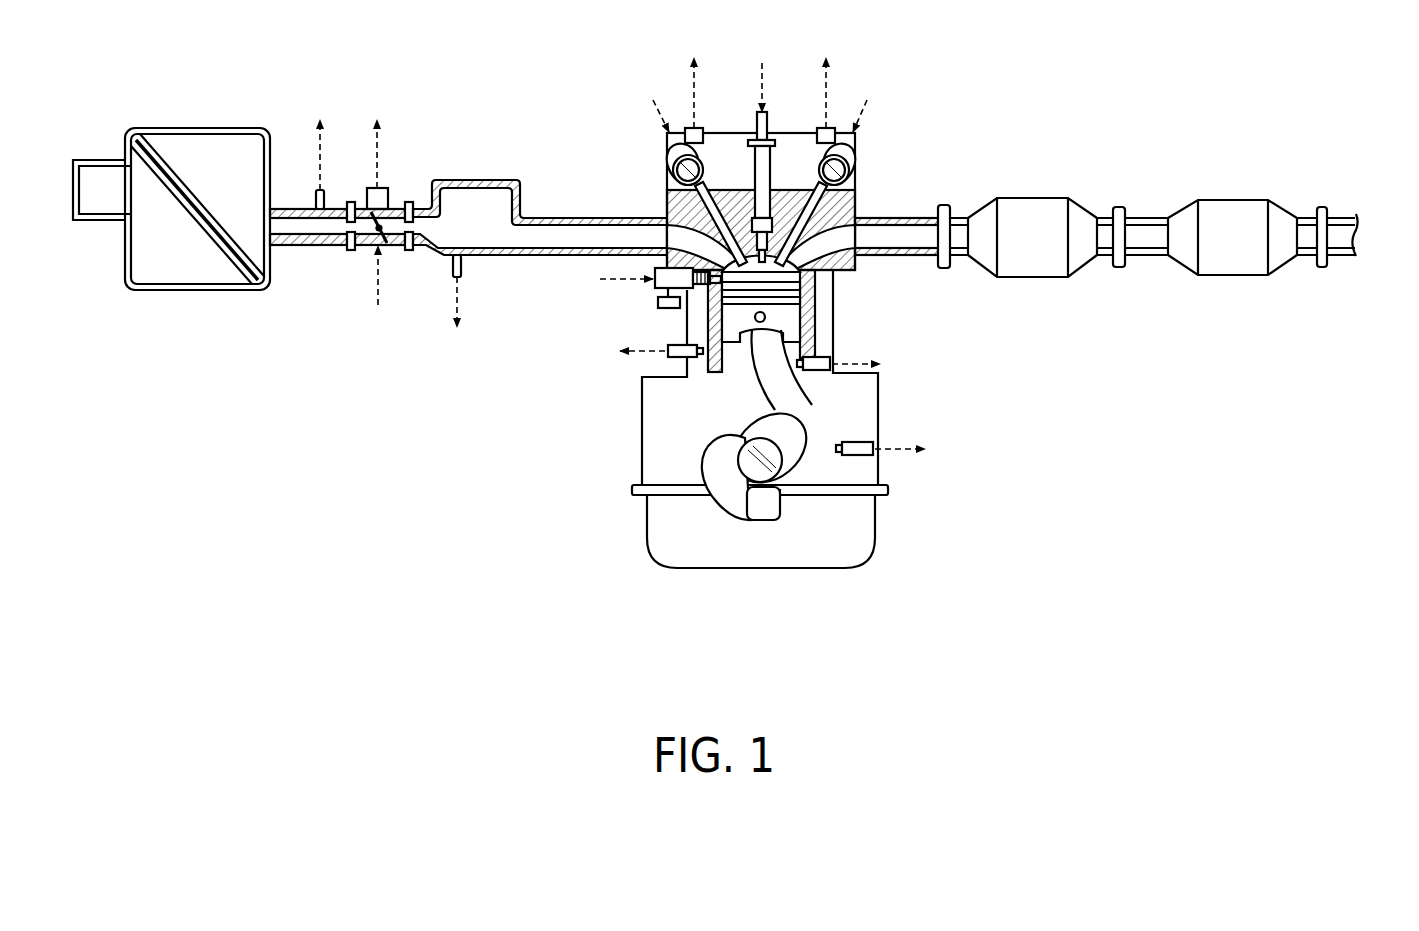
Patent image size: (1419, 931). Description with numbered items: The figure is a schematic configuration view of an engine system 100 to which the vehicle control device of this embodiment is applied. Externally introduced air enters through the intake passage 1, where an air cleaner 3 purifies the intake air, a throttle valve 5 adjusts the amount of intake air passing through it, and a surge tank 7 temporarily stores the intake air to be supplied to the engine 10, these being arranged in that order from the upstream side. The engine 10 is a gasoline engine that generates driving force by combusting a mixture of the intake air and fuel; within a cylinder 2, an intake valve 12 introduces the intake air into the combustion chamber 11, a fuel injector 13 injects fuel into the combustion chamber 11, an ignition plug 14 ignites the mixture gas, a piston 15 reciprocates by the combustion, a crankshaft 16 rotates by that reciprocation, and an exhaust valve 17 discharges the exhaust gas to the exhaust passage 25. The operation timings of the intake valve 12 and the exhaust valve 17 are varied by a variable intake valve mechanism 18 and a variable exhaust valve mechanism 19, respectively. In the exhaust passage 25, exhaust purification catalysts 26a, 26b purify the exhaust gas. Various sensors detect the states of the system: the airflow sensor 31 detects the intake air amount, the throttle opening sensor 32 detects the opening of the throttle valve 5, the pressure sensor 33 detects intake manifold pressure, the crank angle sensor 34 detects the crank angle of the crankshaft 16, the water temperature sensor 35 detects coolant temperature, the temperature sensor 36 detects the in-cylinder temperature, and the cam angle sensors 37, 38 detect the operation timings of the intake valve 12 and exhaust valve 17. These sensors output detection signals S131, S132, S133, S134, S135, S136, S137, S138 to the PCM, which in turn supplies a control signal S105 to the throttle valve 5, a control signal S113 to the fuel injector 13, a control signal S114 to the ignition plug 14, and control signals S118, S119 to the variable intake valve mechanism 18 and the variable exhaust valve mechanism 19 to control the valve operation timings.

The engine system 100 is at (1034, 134).
The air cleaner 3 is at (152, 130).
The intake passage 1 is at (325, 245).
The airflow sensor 31 is at (316, 196).
The throttle opening sensor 32 is at (388, 192).
The throttle valve 5 is at (386, 246).
The surge tank 7 is at (462, 180).
The pressure sensor 33 is at (462, 268).
The engine 10 is at (864, 572).
The intake valve 12 is at (695, 240).
The exhaust valve 17 is at (792, 270).
The variable intake valve mechanism 18 is at (673, 172).
The variable exhaust valve mechanism 19 is at (849, 172).
The cam angle sensor 37 is at (700, 128).
The cam angle sensor 38 is at (822, 128).
The ignition plug 14 is at (767, 160).
The fuel injector 13 is at (655, 291).
The combustion chamber 11 is at (805, 290).
The piston 15 is at (803, 316).
The cylinder 2 is at (745, 335).
The crankshaft 16 is at (762, 482).
The water temperature sensor 35 is at (670, 357).
The temperature sensor 36 is at (828, 371).
The crank angle sensor 34 is at (870, 453).
The exhaust passage 25 is at (906, 258).
The exhaust purification catalyst 26a is at (1036, 198).
The exhaust purification catalyst 26b is at (1236, 198).
The detection signal S131 is at (319, 136).
The detection signal S132 is at (382, 135).
The control signal S105 is at (377, 293).
The detection signal S133 is at (455, 321).
The detection signal S137 is at (695, 78).
The detection signal S138 is at (830, 76).
The control signal S114 is at (757, 73).
The control signal S118 is at (642, 102).
The control signal S119 is at (873, 102).
The control signal S113 is at (598, 278).
The detection signal S135 is at (610, 353).
The detection signal S136 is at (889, 368).
The detection signal S134 is at (932, 448).